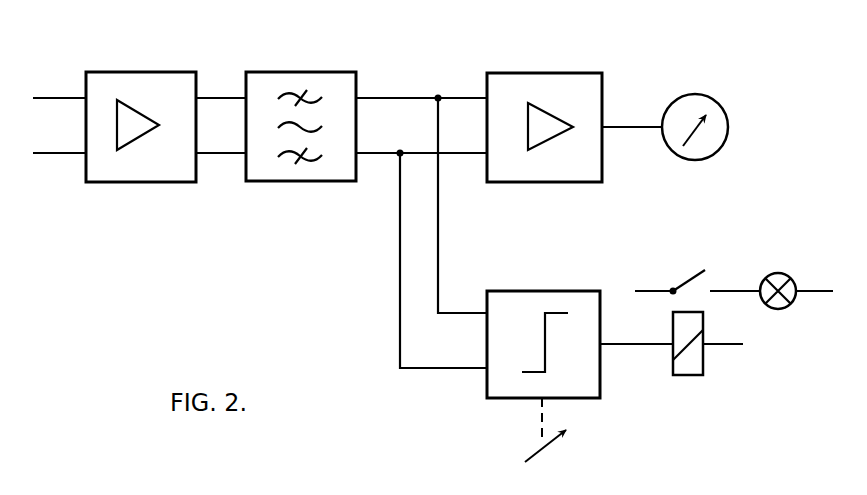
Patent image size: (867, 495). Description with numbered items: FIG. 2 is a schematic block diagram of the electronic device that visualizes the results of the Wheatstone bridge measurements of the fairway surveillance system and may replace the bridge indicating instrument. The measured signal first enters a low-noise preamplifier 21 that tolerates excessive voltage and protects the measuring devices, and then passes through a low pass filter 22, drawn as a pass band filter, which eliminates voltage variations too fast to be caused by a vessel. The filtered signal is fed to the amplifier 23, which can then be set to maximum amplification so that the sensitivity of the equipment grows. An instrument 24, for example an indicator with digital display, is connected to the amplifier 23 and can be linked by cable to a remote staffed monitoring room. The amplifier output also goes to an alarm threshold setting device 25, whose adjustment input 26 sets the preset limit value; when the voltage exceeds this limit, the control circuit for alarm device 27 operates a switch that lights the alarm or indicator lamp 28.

The low-noise preamplifier 21 is at (166, 36).
The low pass filter 22 is at (316, 36).
The amplifier 23 is at (568, 37).
The instrument 24 is at (702, 80).
The alarm threshold setting device 25 is at (567, 252).
The threshold adjustment 26 is at (565, 448).
The control circuit for alarm device 27 is at (720, 364).
The alarm or indicator lamp 28 is at (820, 228).